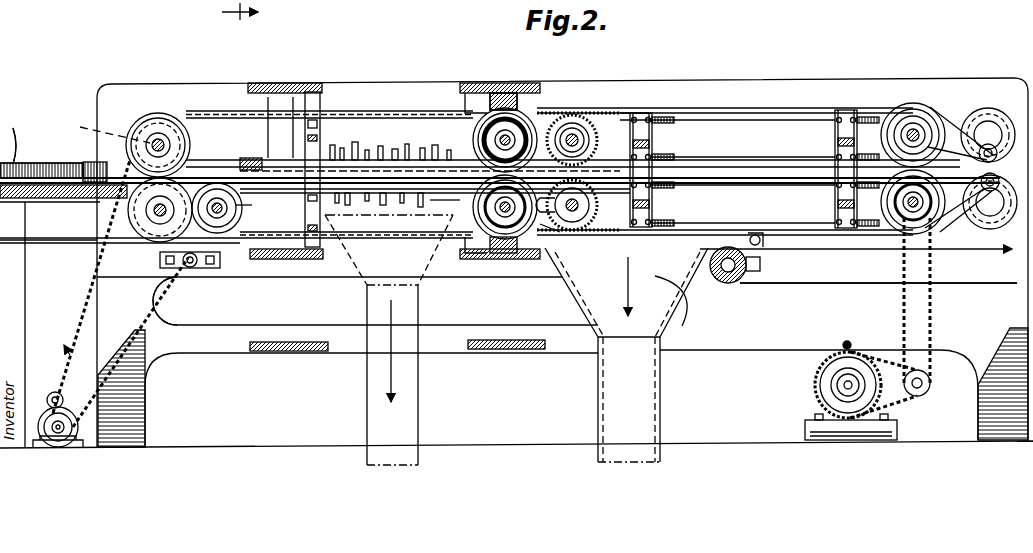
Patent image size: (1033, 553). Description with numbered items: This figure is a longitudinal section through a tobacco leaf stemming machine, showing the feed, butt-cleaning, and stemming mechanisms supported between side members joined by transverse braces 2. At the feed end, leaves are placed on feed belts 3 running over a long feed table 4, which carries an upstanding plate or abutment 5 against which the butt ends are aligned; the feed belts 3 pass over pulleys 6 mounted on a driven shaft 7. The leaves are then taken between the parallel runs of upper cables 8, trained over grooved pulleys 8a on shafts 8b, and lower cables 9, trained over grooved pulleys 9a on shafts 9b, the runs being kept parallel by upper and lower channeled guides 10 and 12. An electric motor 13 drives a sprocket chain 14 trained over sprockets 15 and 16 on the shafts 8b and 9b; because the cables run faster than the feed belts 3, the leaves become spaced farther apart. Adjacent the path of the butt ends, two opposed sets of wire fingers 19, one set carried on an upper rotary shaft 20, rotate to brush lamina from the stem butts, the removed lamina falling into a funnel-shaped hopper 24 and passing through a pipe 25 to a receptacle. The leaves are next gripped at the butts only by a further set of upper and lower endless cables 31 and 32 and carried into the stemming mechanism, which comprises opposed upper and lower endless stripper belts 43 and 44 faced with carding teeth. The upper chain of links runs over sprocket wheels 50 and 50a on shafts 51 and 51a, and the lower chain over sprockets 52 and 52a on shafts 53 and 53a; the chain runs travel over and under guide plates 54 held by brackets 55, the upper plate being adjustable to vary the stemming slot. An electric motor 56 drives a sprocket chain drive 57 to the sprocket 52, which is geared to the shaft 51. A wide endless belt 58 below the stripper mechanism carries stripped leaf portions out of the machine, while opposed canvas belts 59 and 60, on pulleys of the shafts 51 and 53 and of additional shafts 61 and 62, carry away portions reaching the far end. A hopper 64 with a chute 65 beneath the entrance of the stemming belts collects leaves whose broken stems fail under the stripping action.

The transverse braces 2 is at (287, 82).
The feed belts 3 is at (55, 182).
The feed table 4 is at (8, 140).
The upstanding plate or abutment 5 is at (46, 168).
The pulleys 6 is at (238, 270).
The shaft 7 is at (245, 208).
The cables 8 is at (398, 116).
The grooved pulleys 8a is at (172, 132).
The shaft 8b is at (148, 135).
The cables 9 is at (378, 245).
The grooved pulleys 9a is at (158, 258).
The shaft 9b is at (146, 211).
The upper channeled guide 10 is at (238, 163).
The lower channeled guide 12 is at (303, 198).
The electric motor 13 is at (50, 398).
The sprocket chain 14 is at (82, 292).
The sprocket 15 is at (105, 124).
The sprocket 16 is at (96, 247).
The wire fingers 19 is at (375, 152).
The upper rotary shaft 20 is at (455, 200).
The funnel-shaped hopper 24 is at (348, 276).
The pipe 25 is at (418, 422).
The upper endless cables 31 is at (578, 128).
The lower endless cables 32 is at (580, 284).
The upper endless belt 43 is at (762, 108).
The lower endless belt 44 is at (680, 228).
The sprocket wheel 50 is at (900, 102).
The sprocket wheel 50a is at (600, 112).
The shaft 51 is at (930, 115).
The shaft 51a is at (664, 112).
The sprocket 52 is at (882, 284).
The sprocket 52a is at (662, 242).
The shaft 53 is at (892, 232).
The shaft 53a is at (575, 230).
The guide plates 54 is at (806, 116).
The brackets 55 is at (862, 98).
The electric motor 56 is at (814, 382).
The sprocket chain drive 57 is at (934, 340).
The endless belt 58 is at (759, 258).
The endless canvas belt 59 is at (965, 105).
The endless canvas belt 60 is at (945, 248).
The shaft 61 is at (993, 112).
The shaft 62 is at (992, 240).
The hopper 64 is at (684, 322).
The chute 65 is at (655, 404).